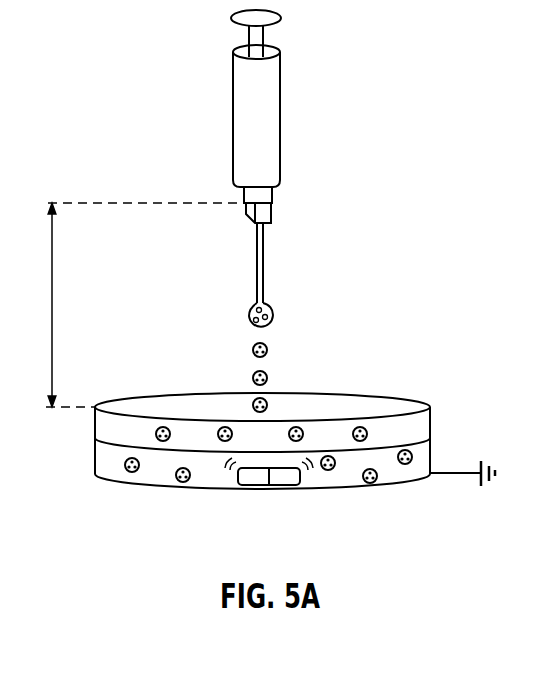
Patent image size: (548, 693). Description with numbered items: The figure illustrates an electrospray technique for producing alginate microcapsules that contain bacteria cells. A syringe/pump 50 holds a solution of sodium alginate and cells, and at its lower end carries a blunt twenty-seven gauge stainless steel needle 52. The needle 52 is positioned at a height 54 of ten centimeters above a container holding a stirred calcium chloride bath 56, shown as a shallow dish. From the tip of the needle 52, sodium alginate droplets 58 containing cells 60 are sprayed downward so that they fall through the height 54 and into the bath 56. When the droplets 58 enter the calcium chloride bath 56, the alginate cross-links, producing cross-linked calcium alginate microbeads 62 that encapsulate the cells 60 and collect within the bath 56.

The syringe/pump 50 is at (282, 82).
The needle 52 is at (265, 253).
The height 54 is at (54, 258).
The CaCl2 bath 56 is at (153, 478).
The sodium alginate droplets 58 is at (252, 348).
The cells 60 is at (252, 306).
The cross-linked calcium alginate microbeads 62 is at (360, 427).